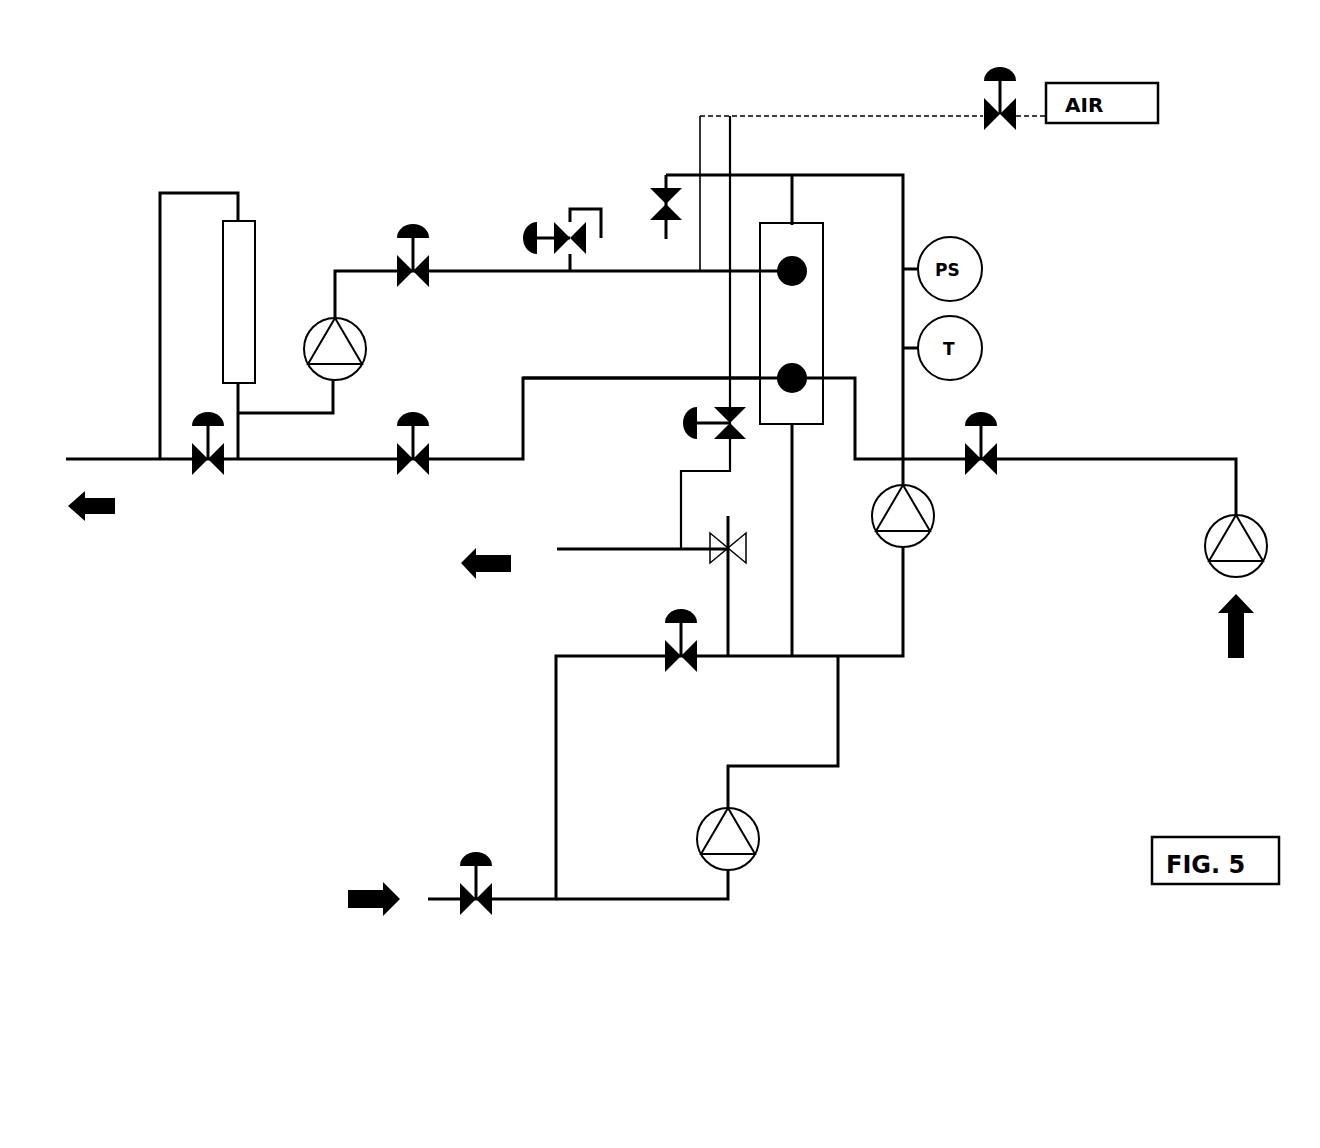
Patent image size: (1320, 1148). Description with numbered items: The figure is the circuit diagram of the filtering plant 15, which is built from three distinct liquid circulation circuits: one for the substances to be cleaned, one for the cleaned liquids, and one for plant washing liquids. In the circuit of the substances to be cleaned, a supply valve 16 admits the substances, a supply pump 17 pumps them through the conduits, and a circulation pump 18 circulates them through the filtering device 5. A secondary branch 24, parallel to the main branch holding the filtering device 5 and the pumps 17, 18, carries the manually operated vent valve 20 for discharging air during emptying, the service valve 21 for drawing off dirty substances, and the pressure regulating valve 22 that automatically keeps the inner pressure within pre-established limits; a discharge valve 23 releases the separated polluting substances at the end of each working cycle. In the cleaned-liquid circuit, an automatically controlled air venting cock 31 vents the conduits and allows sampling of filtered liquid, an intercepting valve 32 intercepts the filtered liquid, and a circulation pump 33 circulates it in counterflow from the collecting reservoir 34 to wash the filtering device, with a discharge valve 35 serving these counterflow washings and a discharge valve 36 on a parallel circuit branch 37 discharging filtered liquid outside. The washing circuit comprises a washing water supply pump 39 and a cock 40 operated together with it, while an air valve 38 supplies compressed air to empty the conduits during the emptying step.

The filtering device 5 is at (823, 321).
The filtering plant 15 is at (502, 604).
The supply valve 16 is at (458, 878).
The supply pump 17 is at (756, 838).
The circulation pump 18 is at (932, 530).
The vent valve 20 is at (650, 200).
The service valve 21 is at (700, 440).
The pressure regulating valve 22 is at (737, 528).
The discharge valve 23 is at (668, 633).
The secondary branch 24 is at (722, 323).
The air venting cock 31 is at (565, 226).
The intercepting valve 32 is at (395, 256).
The circulation pump 33 is at (365, 350).
The collecting reservoir 34 is at (237, 290).
The discharge valve 35 is at (208, 470).
The discharge valve 36 is at (410, 470).
The circuit branch 37 is at (588, 382).
The air valve 38 is at (978, 103).
The washing water supply pump 39 is at (1200, 545).
The cock 40 is at (1003, 440).